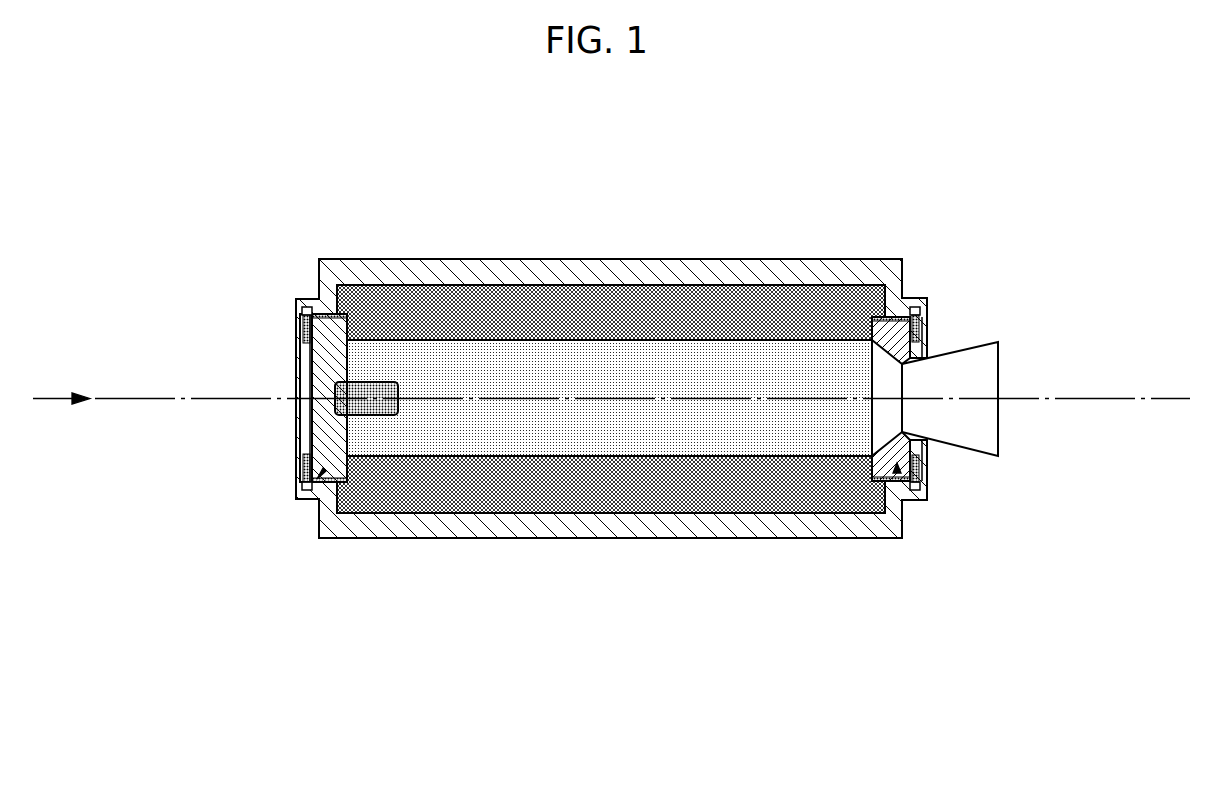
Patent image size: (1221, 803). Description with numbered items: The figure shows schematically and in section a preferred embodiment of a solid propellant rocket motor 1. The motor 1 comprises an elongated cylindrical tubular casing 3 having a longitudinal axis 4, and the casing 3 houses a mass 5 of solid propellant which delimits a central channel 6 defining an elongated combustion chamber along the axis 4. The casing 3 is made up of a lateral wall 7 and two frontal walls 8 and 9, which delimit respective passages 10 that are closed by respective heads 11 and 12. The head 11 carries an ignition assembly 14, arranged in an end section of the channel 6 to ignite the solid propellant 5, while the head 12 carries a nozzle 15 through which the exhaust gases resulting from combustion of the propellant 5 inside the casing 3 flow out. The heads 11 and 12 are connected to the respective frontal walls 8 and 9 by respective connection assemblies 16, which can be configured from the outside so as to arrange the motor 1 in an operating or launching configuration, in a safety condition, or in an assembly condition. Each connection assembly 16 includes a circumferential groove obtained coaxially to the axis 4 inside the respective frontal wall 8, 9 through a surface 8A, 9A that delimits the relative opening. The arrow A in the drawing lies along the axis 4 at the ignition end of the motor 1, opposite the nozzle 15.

The solid propellant rocket motor 1 is at (627, 183).
The casing 3 is at (761, 251).
The longitudinal axis 4 is at (1090, 398).
The mass of solid propellant 5 is at (468, 285).
The central channel 6 is at (664, 359).
The lateral wall 7 is at (412, 270).
The frontal wall 8 is at (305, 290).
The surface 8A is at (382, 287).
The frontal wall 9 is at (907, 283).
The surface 9A is at (891, 325).
The passage 10 is at (290, 488).
The head 11 is at (295, 348).
The head 12 is at (832, 515).
The ignition assembly 14 is at (378, 417).
The nozzle 15 is at (985, 375).
The connection assembly 16 is at (925, 325).
The flow direction A is at (61, 388).